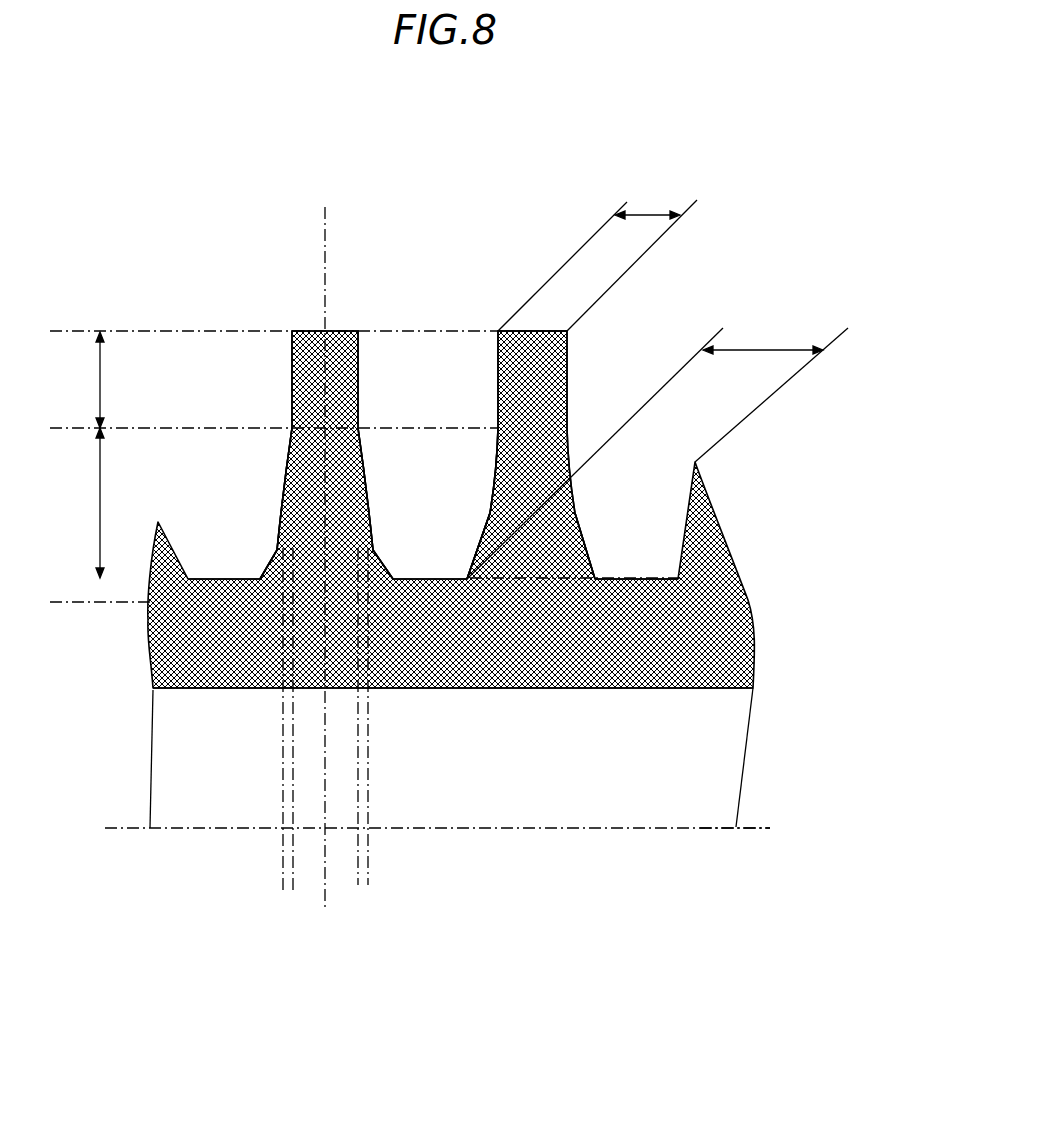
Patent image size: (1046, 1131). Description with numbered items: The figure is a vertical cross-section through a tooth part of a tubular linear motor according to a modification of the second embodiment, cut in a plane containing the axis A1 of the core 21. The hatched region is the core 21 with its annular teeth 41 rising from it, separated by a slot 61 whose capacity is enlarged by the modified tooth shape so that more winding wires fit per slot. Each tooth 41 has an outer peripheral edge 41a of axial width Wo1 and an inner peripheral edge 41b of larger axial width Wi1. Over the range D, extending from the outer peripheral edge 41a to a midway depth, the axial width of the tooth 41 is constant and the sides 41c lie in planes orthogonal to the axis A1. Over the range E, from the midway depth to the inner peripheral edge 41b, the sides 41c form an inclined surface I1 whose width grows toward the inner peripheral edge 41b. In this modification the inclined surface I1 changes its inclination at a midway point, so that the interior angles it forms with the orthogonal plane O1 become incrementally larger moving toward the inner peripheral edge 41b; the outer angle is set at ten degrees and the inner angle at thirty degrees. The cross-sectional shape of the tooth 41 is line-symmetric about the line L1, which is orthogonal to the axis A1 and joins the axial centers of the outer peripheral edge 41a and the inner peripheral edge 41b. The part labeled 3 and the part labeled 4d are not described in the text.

The stator core 3 is at (752, 630).
The teeth 41 is at (282, 330).
The outer peripheral edge 41a is at (542, 330).
The inner peripheral edge 41b is at (478, 547).
The side 41c is at (583, 508).
The tooth intermediate portion 4d is at (489, 453).
The slot 61 is at (391, 410).
The core 21 is at (153, 662).
The line L1 is at (328, 888).
The orthogonal plane O1 is at (284, 842).
The axis A1 is at (752, 826).
The range D is at (88, 380).
The range E is at (88, 503).
The axial width of the outer peripheral edge Wo1 is at (597, 260).
The axial width of the inner peripheral edge Wi1 is at (657, 452).
The inclined surface I1 is at (488, 505).